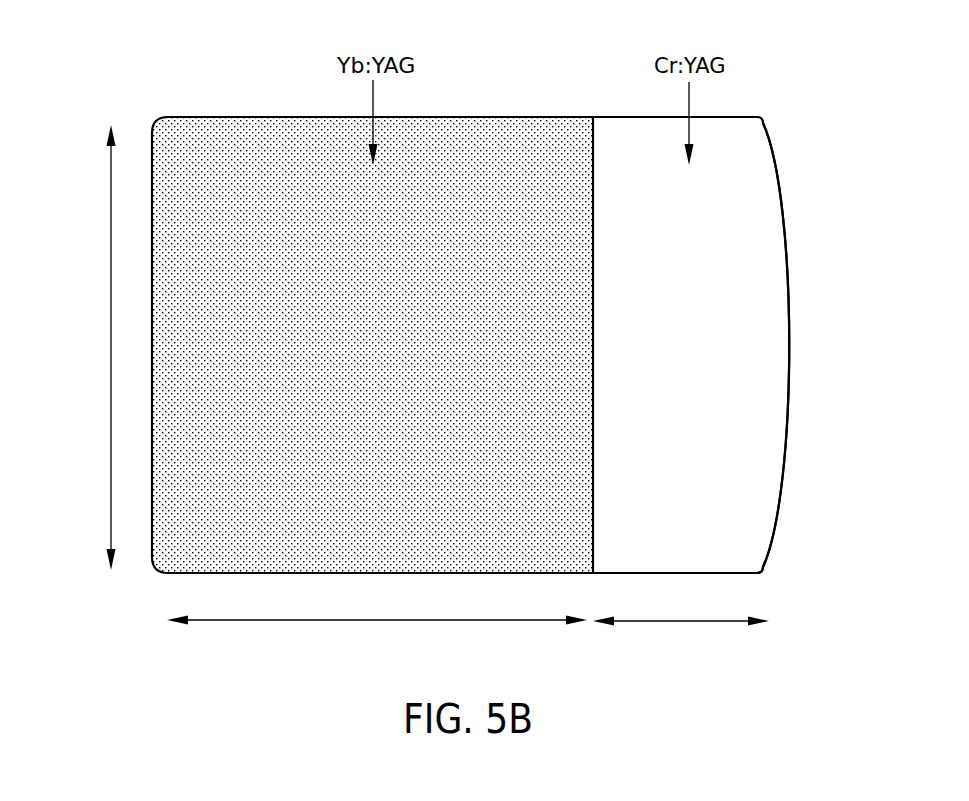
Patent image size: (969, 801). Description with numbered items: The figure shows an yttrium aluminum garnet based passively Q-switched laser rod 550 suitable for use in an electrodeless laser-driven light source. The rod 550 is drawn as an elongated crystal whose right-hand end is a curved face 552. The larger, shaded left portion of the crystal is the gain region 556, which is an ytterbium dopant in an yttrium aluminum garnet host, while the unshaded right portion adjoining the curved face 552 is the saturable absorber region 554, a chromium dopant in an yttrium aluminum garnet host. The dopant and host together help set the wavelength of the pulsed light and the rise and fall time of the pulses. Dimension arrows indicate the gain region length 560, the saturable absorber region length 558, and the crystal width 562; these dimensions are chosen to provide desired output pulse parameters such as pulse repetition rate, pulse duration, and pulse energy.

The YAG-based passively Q-switched laser rod 550 is at (538, 82).
The curved face 552 is at (782, 185).
The saturable absorber region 554 is at (720, 545).
The gain region 556 is at (222, 125).
The saturable absorber region length 558 is at (647, 622).
The gain region length 560 is at (283, 621).
The crystal width 562 is at (110, 417).